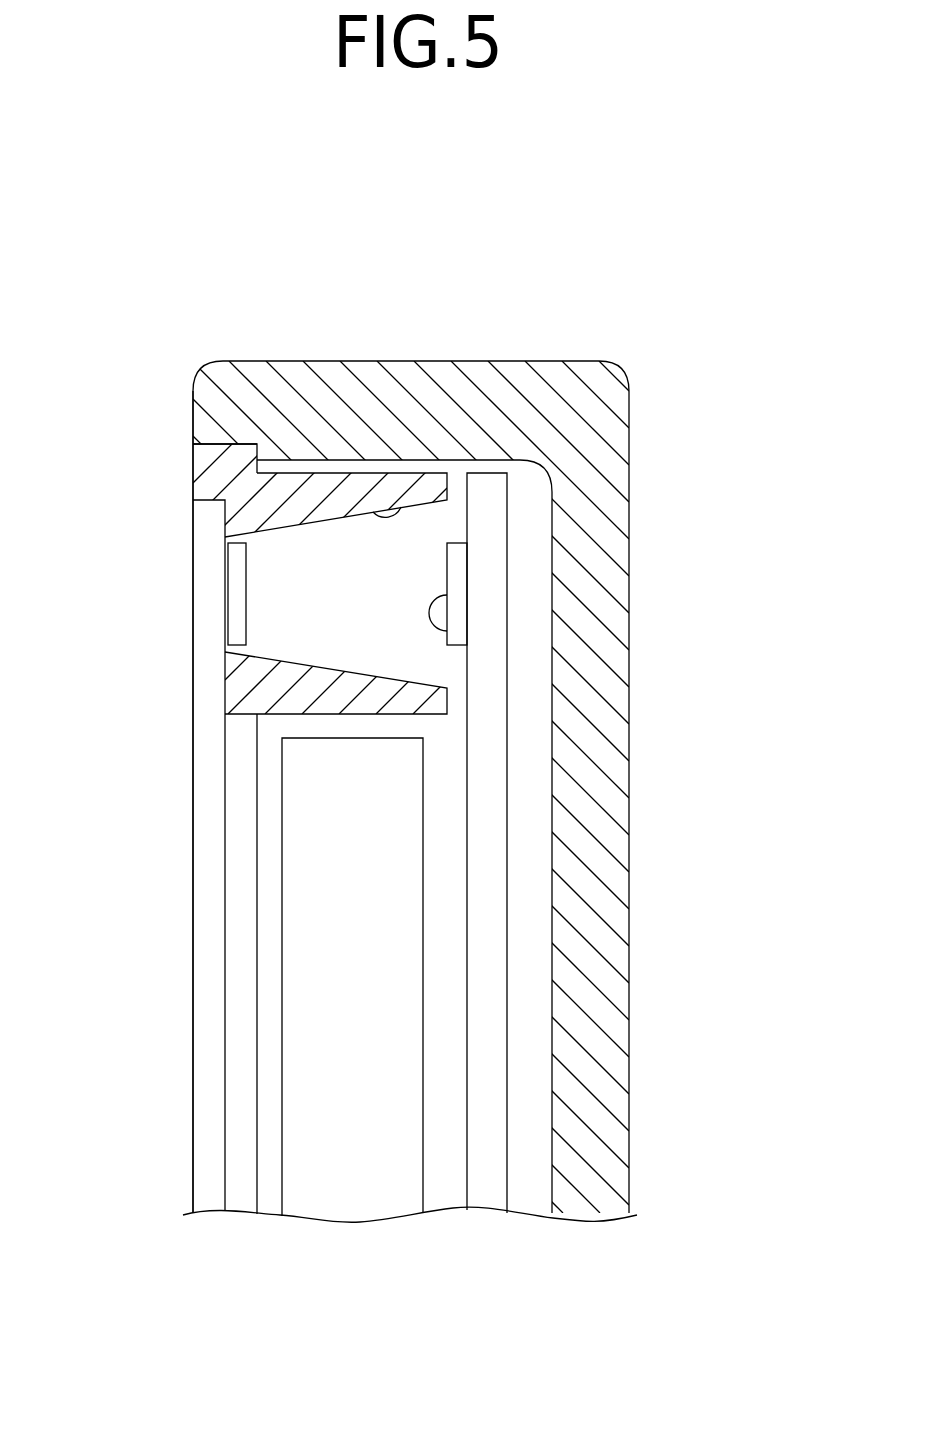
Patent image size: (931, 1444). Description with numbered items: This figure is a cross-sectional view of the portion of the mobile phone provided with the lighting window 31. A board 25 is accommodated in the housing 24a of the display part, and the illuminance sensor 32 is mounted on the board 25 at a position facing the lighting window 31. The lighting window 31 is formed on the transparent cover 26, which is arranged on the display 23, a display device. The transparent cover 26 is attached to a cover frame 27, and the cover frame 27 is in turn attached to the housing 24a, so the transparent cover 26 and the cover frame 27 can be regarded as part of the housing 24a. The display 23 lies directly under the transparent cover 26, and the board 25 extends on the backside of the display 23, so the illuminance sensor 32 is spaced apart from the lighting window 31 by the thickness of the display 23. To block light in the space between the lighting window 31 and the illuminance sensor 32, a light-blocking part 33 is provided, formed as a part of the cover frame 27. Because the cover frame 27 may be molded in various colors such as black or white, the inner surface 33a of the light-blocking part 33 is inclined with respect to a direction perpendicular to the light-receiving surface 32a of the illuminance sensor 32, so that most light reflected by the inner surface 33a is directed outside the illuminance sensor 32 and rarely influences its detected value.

The display 23 is at (345, 1165).
The housing 24a is at (605, 812).
The board 25 is at (487, 938).
The transparent cover 26 is at (207, 940).
The cover frame 27 is at (203, 460).
The lighting window 31 is at (233, 587).
The illuminance sensor 32 is at (458, 562).
The light-receiving surface 32a is at (432, 633).
The light-blocking part 33 is at (322, 487).
The inner surface 33a is at (393, 523).